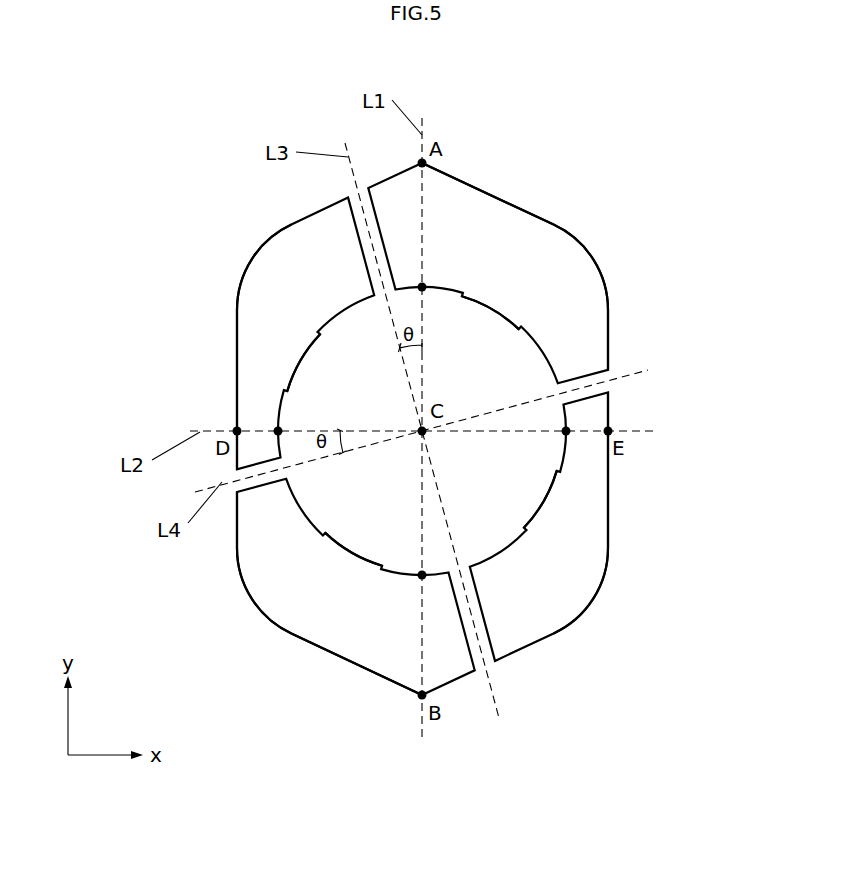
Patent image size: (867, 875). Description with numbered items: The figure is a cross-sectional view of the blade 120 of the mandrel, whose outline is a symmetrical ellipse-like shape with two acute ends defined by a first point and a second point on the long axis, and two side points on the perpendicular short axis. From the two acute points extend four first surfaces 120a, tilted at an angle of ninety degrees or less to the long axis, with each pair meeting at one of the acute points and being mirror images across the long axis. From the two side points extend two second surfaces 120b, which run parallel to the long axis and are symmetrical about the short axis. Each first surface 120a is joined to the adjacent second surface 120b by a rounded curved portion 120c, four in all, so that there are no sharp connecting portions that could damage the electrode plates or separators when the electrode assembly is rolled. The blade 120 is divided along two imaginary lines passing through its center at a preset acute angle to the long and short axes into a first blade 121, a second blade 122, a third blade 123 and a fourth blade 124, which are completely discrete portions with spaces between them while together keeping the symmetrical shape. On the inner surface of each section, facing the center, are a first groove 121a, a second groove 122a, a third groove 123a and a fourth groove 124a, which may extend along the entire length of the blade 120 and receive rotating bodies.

The blade 120 is at (178, 138).
The first surface 120a is at (565, 185).
The second surface 120b is at (667, 340).
The curved portion 120c is at (573, 188).
The first blade 121 is at (540, 253).
The first groove 121a is at (513, 312).
The second blade 122 is at (558, 608).
The second groove 122a is at (553, 495).
The third blade 123 is at (320, 633).
The third groove 123a is at (325, 548).
The fourth blade 124 is at (279, 241).
The fourth groove 124a is at (292, 364).